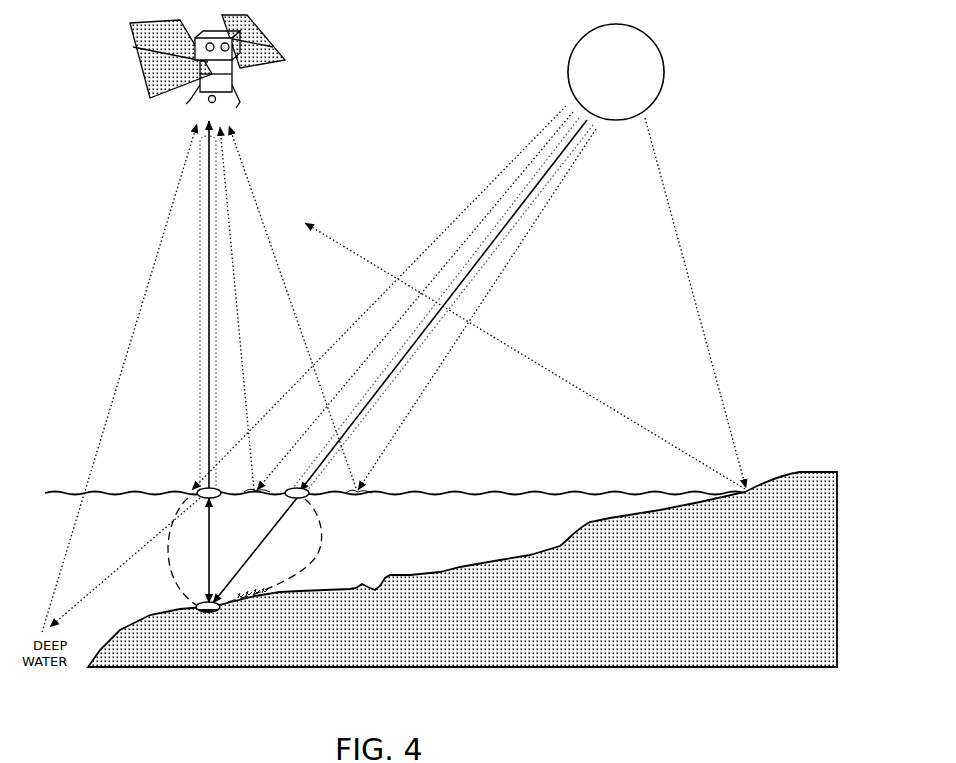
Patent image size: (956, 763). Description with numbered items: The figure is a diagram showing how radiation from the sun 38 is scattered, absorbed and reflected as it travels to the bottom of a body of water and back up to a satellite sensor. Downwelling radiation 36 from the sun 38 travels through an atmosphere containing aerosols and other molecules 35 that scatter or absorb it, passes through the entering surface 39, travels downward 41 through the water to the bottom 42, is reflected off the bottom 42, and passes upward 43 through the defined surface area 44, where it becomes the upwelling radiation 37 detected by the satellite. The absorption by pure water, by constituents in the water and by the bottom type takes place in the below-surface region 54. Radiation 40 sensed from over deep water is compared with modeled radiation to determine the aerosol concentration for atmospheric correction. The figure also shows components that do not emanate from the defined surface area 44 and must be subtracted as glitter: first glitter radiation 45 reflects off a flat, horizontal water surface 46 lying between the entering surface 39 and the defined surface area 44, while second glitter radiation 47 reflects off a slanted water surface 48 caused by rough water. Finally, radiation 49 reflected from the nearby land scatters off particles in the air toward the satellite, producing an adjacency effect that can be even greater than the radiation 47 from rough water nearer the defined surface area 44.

The atmospheric aerosols and other molecules 35 is at (366, 413).
The downwelling radiation 36 is at (341, 437).
The upwelling radiation 37 is at (200, 458).
The sun 38 is at (659, 52).
The entering surface 39 is at (306, 497).
The radiation sensed from over water 40 is at (122, 377).
The downward passage of radiation 41 is at (264, 540).
The bottom 42 is at (200, 603).
The upward passage of radiation 43 is at (206, 551).
The defined surface area 44 is at (213, 488).
The first glitter radiation 45 is at (242, 366).
The flat, horizontal water surface 46 is at (258, 491).
The second glitter radiation 47 is at (291, 306).
The slanted water surface 48 is at (360, 491).
The radiation reflected from the land 49 is at (627, 420).
The below-surface region 54 is at (322, 529).